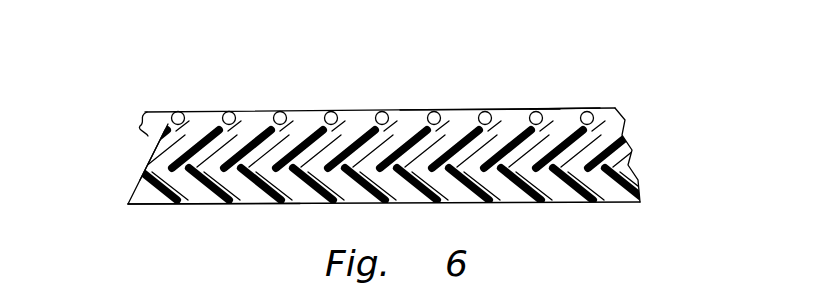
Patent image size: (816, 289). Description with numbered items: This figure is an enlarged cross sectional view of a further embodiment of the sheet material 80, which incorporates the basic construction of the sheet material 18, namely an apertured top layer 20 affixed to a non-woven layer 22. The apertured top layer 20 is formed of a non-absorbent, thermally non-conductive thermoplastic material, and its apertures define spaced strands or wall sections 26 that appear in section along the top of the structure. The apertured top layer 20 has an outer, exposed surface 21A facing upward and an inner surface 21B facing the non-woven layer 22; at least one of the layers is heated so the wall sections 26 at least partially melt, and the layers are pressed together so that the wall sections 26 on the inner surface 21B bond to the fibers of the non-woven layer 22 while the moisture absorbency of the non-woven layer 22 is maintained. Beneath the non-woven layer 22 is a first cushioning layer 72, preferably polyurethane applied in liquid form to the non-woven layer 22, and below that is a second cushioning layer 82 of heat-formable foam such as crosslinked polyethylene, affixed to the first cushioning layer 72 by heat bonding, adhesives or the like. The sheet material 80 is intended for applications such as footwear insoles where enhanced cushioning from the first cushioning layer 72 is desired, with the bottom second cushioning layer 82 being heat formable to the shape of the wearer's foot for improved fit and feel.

The sheet material 18 is at (116, 117).
The wall sections 26 is at (278, 110).
The sheet material 80 is at (500, 93).
The outer exposed surface 21A is at (547, 108).
The inner surface 21B is at (567, 130).
The apertured top layer 20 is at (626, 98).
The non-woven layer 22 is at (624, 137).
The first cushioning layer 72 is at (160, 147).
The second cushioning layer 82 is at (135, 183).